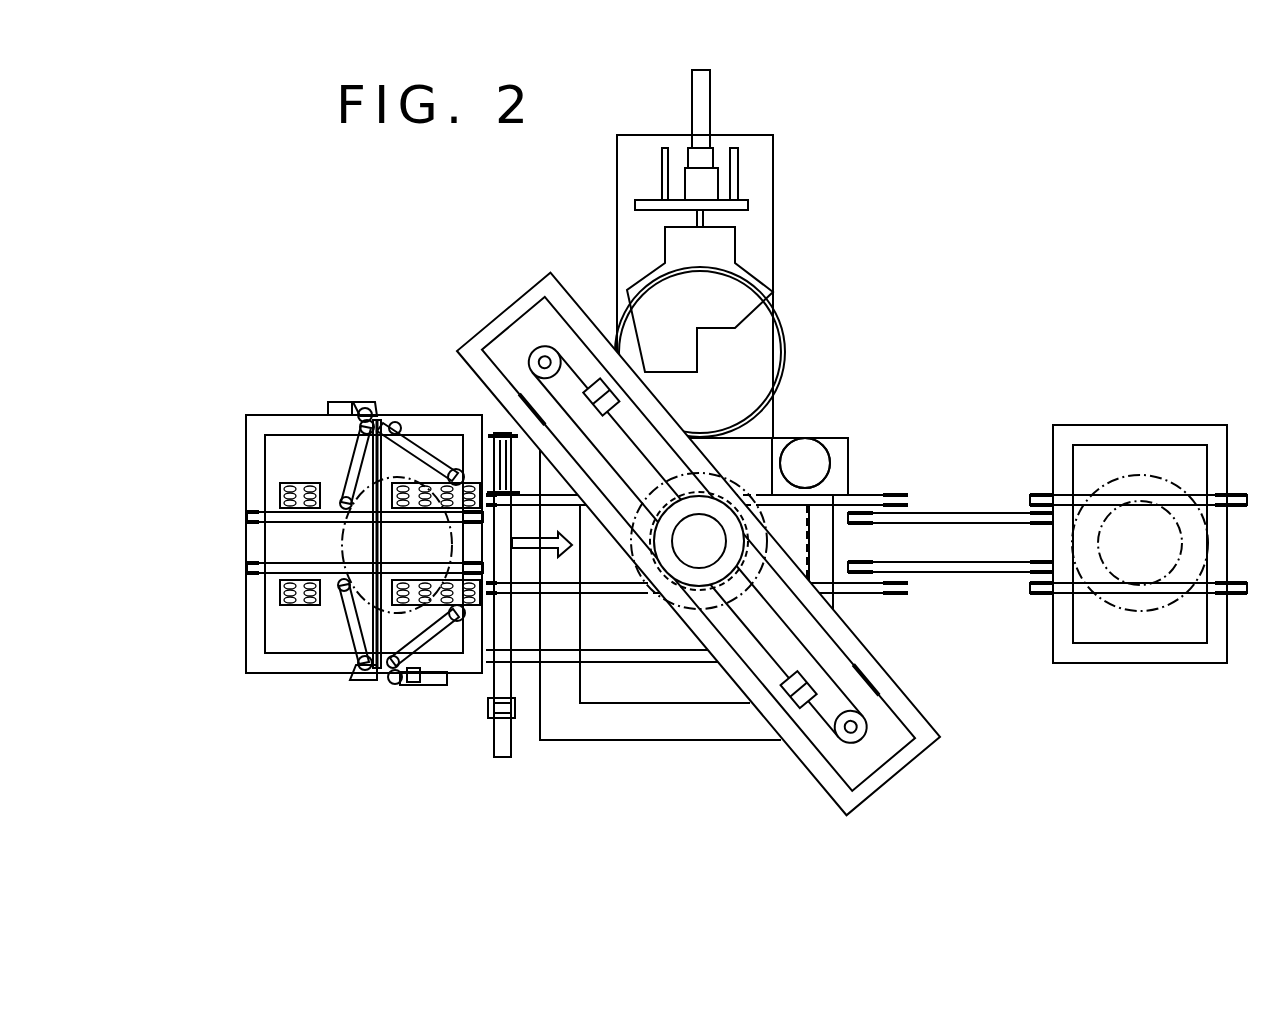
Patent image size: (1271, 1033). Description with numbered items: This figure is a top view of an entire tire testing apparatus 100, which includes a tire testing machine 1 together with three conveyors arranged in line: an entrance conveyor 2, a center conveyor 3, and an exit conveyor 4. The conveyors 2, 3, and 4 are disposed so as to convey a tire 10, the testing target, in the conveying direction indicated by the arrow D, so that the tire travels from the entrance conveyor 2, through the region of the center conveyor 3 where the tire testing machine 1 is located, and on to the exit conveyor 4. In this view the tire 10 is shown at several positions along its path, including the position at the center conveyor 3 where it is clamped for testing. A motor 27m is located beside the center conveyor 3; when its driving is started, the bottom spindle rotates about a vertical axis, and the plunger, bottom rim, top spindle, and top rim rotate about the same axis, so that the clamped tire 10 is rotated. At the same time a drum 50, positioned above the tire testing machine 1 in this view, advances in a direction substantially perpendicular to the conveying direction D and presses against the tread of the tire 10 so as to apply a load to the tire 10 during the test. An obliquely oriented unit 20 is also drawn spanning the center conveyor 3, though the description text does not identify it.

The tire testing apparatus 100 is at (1124, 222).
The tire testing machine 1 is at (466, 273).
The entrance conveyor 2 is at (297, 706).
The center conveyor 3 is at (604, 686).
The exit conveyor 4 is at (1137, 692).
The tire 10 is at (342, 541).
The transfer arm 20 is at (944, 737).
The motor 27m is at (803, 456).
The drum 50 is at (785, 330).